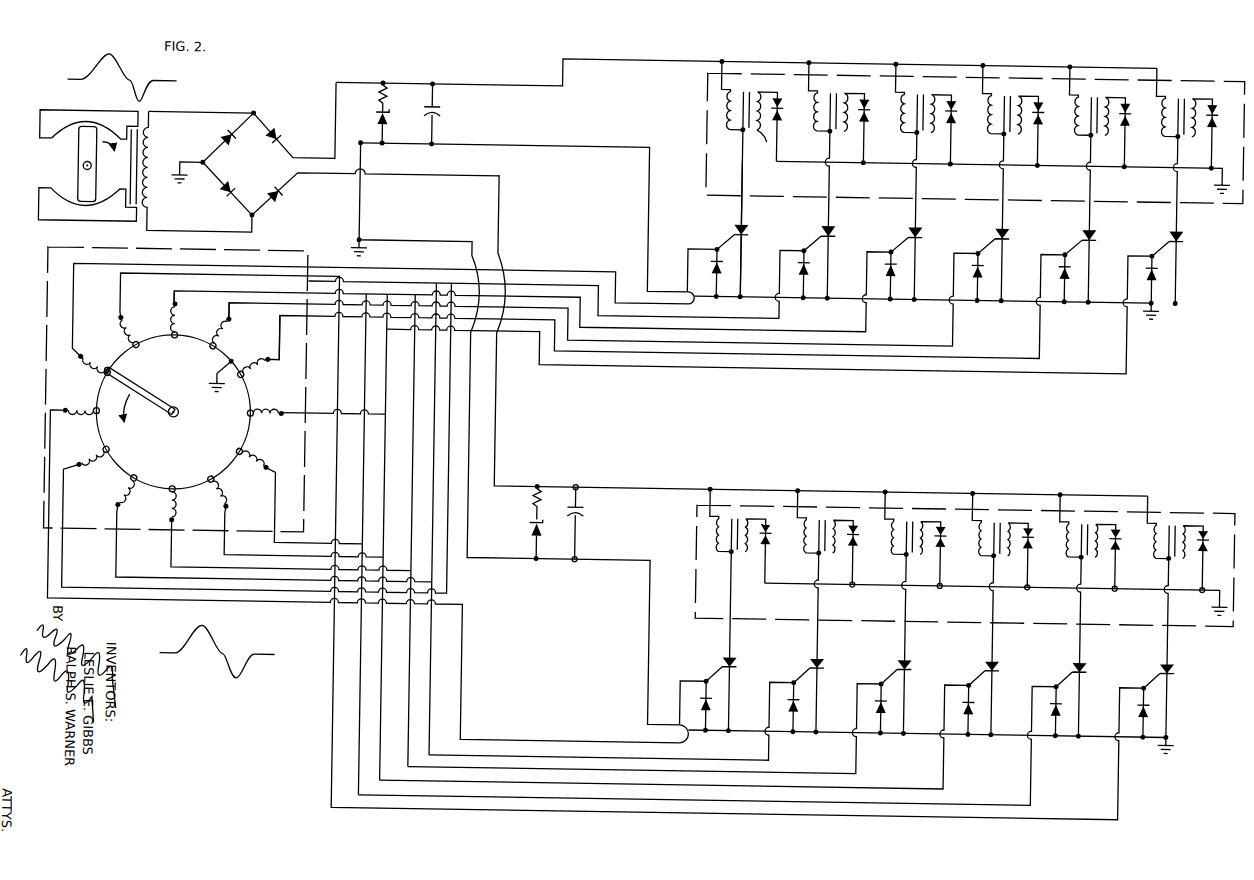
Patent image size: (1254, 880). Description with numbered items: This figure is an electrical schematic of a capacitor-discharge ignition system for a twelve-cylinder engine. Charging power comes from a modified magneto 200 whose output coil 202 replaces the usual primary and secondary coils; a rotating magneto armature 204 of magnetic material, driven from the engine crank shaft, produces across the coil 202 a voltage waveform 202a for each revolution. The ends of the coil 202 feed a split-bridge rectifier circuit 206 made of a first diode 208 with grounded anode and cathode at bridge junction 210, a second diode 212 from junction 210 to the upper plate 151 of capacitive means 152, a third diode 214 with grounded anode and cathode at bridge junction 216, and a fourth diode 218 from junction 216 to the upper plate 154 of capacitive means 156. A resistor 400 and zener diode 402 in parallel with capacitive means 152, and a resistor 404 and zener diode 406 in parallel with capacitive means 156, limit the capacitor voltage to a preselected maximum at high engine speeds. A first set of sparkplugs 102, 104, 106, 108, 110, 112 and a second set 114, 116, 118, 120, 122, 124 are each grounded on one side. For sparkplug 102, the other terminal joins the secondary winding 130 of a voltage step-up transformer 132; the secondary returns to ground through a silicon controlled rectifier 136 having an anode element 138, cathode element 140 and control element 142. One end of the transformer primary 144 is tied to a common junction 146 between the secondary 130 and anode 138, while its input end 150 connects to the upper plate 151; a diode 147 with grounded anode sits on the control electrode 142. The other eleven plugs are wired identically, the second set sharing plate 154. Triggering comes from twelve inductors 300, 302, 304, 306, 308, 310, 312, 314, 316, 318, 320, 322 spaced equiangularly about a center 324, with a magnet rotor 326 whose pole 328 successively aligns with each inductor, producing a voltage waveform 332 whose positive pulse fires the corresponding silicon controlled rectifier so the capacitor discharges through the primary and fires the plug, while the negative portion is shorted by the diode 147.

The modified magneto 200 is at (66, 118).
The output coil 202 is at (150, 144).
The voltage waveform 202a is at (100, 60).
The rotating magneto armature 204 is at (73, 154).
The split-bridge rectifier circuit 206 is at (266, 174).
The first diode 208 is at (223, 152).
The bridge junction 210 is at (249, 118).
The second diode 212 is at (277, 133).
The third diode 214 is at (222, 200).
The bridge junction 216 is at (248, 222).
The fourth diode 218 is at (277, 206).
The resistor 400 is at (372, 101).
The zener diode 402 is at (372, 120).
The upper plate 151 is at (436, 110).
The capacitive means 152 is at (437, 117).
The input end of transformer primary 150 is at (702, 76).
The voltage step-up transformer 132 is at (721, 109).
The transformer primary 144 is at (722, 104).
The common junction 146 is at (724, 130).
The secondary winding 130 is at (761, 143).
The sparkplug 102 is at (780, 103).
The sparkplug 104 is at (867, 103).
The sparkplug 106 is at (954, 103).
The sparkplug 108 is at (1041, 103).
The sparkplug 110 is at (1128, 103).
The sparkplug 112 is at (1215, 103).
The anode element 138 is at (735, 222).
The silicon controlled rectifier 136 is at (748, 227).
The control element 142 is at (724, 240).
The cathode element 140 is at (744, 235).
The diode 147 is at (707, 265).
The inductor 300 is at (171, 318).
The inductor 302 is at (128, 339).
The inductor 304 is at (100, 377).
The inductor 306 is at (96, 425).
The inductor 308 is at (104, 471).
The inductor 310 is at (128, 497).
The inductor 312 is at (190, 505).
The inductor 314 is at (245, 488).
The inductor 316 is at (252, 458).
The inductor 318 is at (263, 413).
The inductor 320 is at (252, 372).
The inductor 322 is at (226, 336).
The center 324 is at (173, 428).
The magnet rotor 326 is at (152, 402).
The magnet pole 328 is at (110, 376).
The resistor 404 is at (532, 500).
The zener diode 406 is at (531, 526).
The upper plate 154 is at (585, 509).
The capacitive means 156 is at (587, 516).
The sparkplug 114 is at (774, 531).
The sparkplug 116 is at (861, 537).
The sparkplug 118 is at (949, 537).
The sparkplug 120 is at (1036, 537).
The sparkplug 122 is at (1124, 537).
The sparkplug 124 is at (1221, 520).
The voltage waveform 332 is at (240, 654).